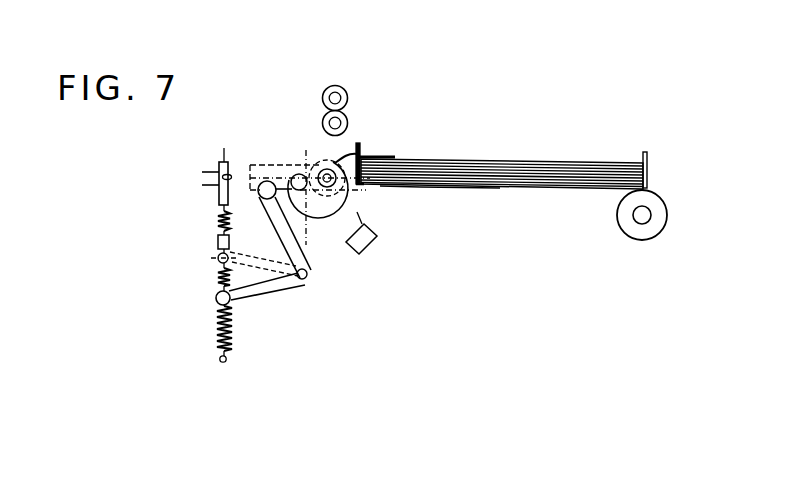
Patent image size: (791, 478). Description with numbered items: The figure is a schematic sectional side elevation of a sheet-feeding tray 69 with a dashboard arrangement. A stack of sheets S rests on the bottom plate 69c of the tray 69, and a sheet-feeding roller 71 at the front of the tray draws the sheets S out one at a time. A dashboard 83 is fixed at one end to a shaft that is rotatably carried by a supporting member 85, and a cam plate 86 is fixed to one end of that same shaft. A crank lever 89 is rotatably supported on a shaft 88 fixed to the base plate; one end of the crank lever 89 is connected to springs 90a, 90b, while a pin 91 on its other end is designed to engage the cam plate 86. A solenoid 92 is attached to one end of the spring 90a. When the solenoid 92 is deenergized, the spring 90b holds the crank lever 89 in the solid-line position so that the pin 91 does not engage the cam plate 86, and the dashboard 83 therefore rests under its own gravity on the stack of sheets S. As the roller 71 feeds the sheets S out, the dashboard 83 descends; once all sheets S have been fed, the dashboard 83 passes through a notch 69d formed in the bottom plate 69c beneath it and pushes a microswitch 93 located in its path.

The sheet-feeding tray 69 is at (517, 195).
The bottom plate 69c is at (443, 189).
The notch 69d is at (408, 189).
The sheet-feeding roller 71 is at (632, 234).
The dashboard 83 is at (382, 153).
The supporting member 85 is at (288, 165).
The cam plate 86 is at (320, 216).
The shaft 88 is at (353, 191).
The crank lever 89 is at (266, 298).
The spring 90a is at (218, 241).
The spring 90b is at (217, 333).
The pin 91 is at (261, 216).
The solenoid 92 is at (224, 150).
The microswitch 93 is at (370, 250).
The sheets S is at (532, 169).